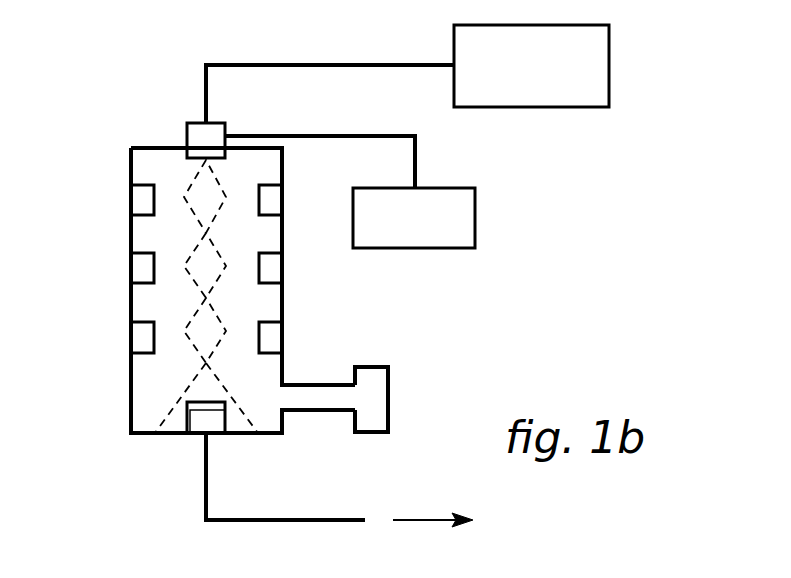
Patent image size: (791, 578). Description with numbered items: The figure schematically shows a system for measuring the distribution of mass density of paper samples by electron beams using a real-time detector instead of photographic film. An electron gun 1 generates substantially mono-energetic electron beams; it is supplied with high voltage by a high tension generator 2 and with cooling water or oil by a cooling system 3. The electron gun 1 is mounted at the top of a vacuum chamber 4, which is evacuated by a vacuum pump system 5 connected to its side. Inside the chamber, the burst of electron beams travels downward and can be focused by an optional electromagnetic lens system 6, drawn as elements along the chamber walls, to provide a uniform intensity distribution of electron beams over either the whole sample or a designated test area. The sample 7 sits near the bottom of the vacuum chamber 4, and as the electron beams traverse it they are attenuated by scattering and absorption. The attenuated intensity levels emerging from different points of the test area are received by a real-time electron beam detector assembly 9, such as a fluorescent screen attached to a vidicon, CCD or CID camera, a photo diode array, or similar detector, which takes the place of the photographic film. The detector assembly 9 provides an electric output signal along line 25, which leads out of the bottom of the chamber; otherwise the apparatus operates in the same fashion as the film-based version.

The electron gun 1 is at (187, 134).
The high tension generator 2 is at (610, 52).
The cooling system 3 is at (477, 218).
The vacuum chamber 4 is at (131, 237).
The vacuum pump system 5 is at (390, 390).
The electromagnetic lens system 6 is at (140, 337).
The sample 7 is at (186, 410).
The real-time electron beam detector assembly 9 is at (214, 433).
The line 25 is at (300, 520).